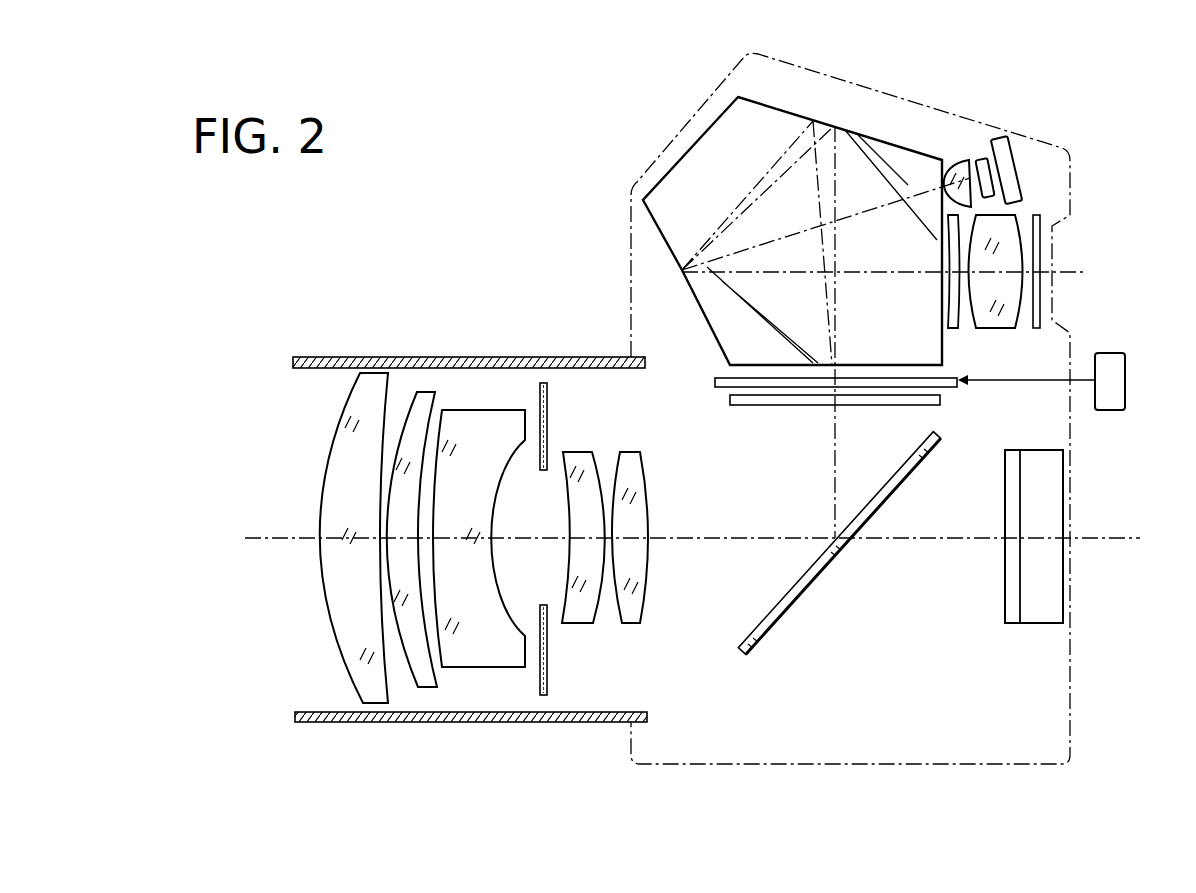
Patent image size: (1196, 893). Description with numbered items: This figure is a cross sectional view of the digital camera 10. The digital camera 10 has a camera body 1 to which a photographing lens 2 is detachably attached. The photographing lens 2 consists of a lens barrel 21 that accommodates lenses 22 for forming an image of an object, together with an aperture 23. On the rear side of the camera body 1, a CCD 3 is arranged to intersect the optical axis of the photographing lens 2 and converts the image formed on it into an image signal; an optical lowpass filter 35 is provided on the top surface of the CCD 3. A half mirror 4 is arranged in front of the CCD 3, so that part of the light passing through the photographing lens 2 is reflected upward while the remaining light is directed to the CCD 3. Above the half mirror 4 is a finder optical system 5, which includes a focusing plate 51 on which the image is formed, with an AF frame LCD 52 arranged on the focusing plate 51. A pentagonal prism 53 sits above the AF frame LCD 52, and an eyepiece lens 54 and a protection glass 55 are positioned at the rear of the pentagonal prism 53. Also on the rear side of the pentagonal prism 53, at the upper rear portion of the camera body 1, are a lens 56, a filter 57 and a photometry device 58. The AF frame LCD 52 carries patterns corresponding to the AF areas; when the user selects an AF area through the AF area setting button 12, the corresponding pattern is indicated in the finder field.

The digital camera 10 is at (470, 84).
The camera body 1 is at (818, 772).
The photographing lens 2 is at (448, 270).
The lens barrel 21 is at (385, 724).
The lenses 22 is at (372, 388).
The aperture 23 is at (548, 663).
The CCD 3 is at (1051, 505).
The optical lowpass filter 35 is at (1012, 600).
The half mirror 4 is at (780, 605).
The finder optical system 5 is at (816, 88).
The focusing plate 51 is at (778, 400).
The AF frame LCD 52 is at (715, 383).
The pentagonal prism 53 is at (718, 160).
The eyepiece lens 54 is at (947, 333).
The protection glass 55 is at (1040, 253).
The lens 56 is at (960, 162).
The filter 57 is at (985, 157).
The photometry device 58 is at (1008, 155).
The AF area setting button 12 is at (1118, 383).